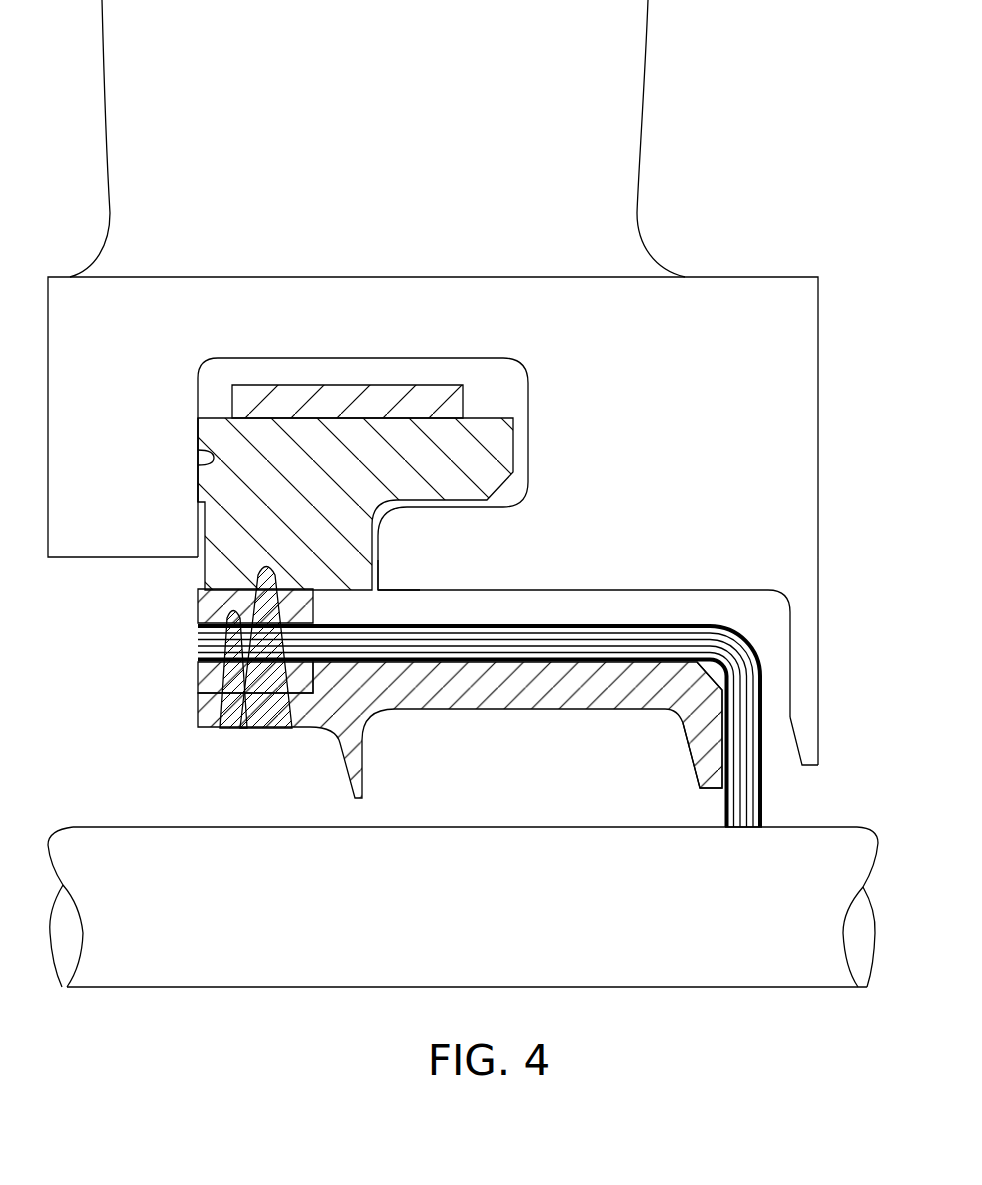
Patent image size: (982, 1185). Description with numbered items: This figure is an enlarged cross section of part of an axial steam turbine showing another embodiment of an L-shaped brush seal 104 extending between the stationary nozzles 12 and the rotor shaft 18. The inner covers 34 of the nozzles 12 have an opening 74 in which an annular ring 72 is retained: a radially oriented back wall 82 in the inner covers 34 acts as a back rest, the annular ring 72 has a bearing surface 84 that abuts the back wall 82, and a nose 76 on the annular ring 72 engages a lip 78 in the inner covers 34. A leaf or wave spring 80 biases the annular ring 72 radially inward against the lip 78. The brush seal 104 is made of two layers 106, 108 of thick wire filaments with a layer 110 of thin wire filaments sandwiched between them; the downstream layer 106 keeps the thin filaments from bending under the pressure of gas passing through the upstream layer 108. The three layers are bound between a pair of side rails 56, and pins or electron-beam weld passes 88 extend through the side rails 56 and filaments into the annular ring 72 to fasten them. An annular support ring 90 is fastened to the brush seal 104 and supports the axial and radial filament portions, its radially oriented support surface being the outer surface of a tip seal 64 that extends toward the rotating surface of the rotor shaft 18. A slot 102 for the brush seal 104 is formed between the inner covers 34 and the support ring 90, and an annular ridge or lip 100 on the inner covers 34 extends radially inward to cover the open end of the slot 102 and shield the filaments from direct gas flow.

The stationary nozzles 12 is at (379, 159).
The inner covers 34 is at (676, 409).
The rotor shaft 18 is at (339, 880).
The opening 74 is at (514, 380).
The nose 76 is at (360, 504).
The annular ring 72 is at (252, 480).
The spring 80 is at (345, 395).
The bearing surface 84 is at (198, 455).
The back wall 82 is at (198, 480).
The lip 78 is at (409, 567).
The side rails 56 is at (198, 682).
The pins or EB welding pass 88 is at (270, 715).
The annular support ring 90 is at (460, 730).
The tip seal 64 is at (702, 743).
The annular ridge or lip 100 is at (805, 720).
The slot 102 is at (752, 601).
The brush seal 104 is at (520, 722).
The downstream layer of thick wire filaments 106 is at (725, 813).
The upstream layer of thick wire filaments 108 is at (762, 807).
The layer of thin wire filaments 110 is at (745, 813).